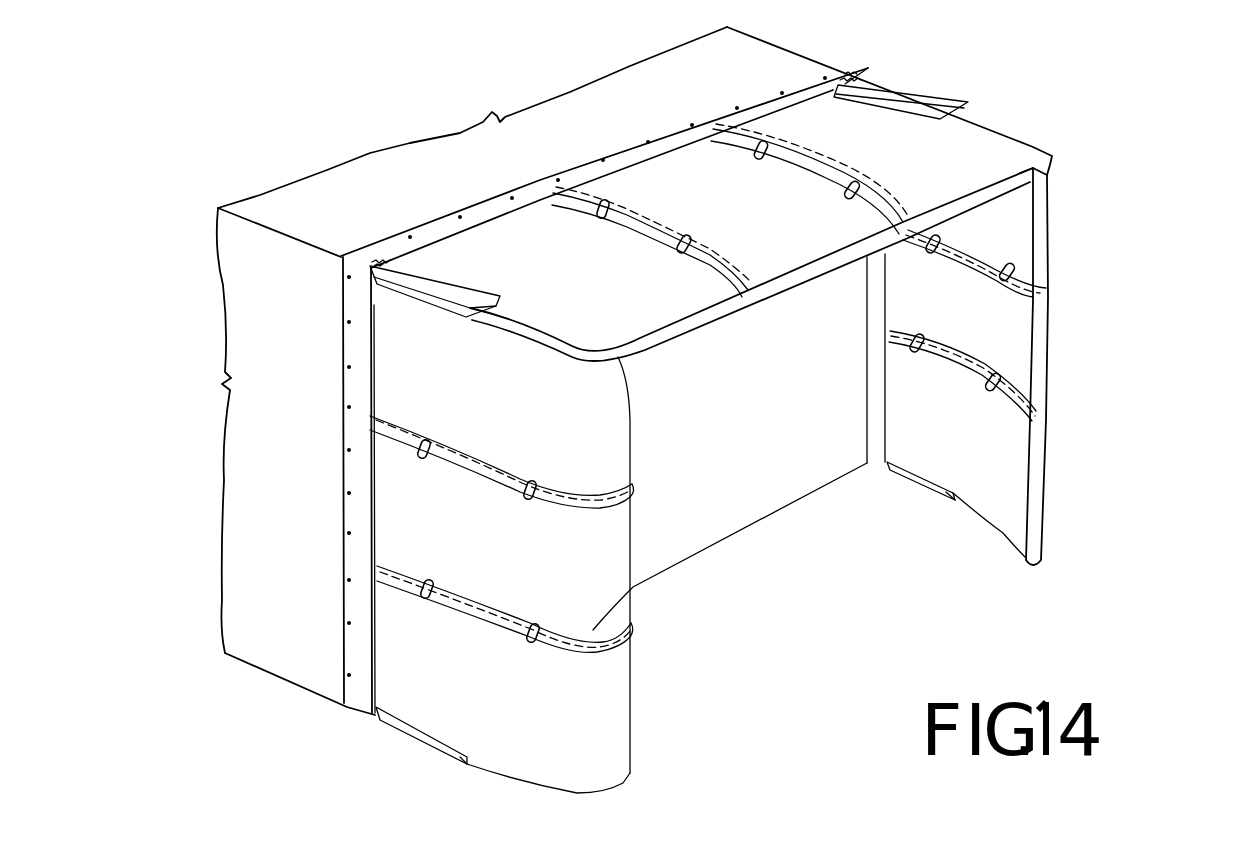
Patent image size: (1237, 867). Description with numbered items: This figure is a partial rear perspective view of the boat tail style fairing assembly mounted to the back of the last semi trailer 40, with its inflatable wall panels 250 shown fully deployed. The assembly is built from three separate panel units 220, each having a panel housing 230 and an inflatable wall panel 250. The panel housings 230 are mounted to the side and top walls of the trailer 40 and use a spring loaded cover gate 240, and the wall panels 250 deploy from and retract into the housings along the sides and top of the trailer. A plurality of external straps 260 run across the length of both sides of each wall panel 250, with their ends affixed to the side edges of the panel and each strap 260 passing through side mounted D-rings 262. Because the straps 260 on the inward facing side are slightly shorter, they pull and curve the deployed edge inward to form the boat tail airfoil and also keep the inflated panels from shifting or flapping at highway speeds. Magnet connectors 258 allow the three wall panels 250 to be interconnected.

The semi trailer 40 is at (688, 82).
The panel unit 220 is at (530, 187).
The panel housing 230 is at (442, 218).
The spring loaded cover gate 240 is at (440, 283).
The inflatable wall panel 250 is at (1017, 237).
The magnet connector 258 is at (1040, 185).
The external strap 260 is at (643, 218).
The D-ring 262 is at (850, 186).